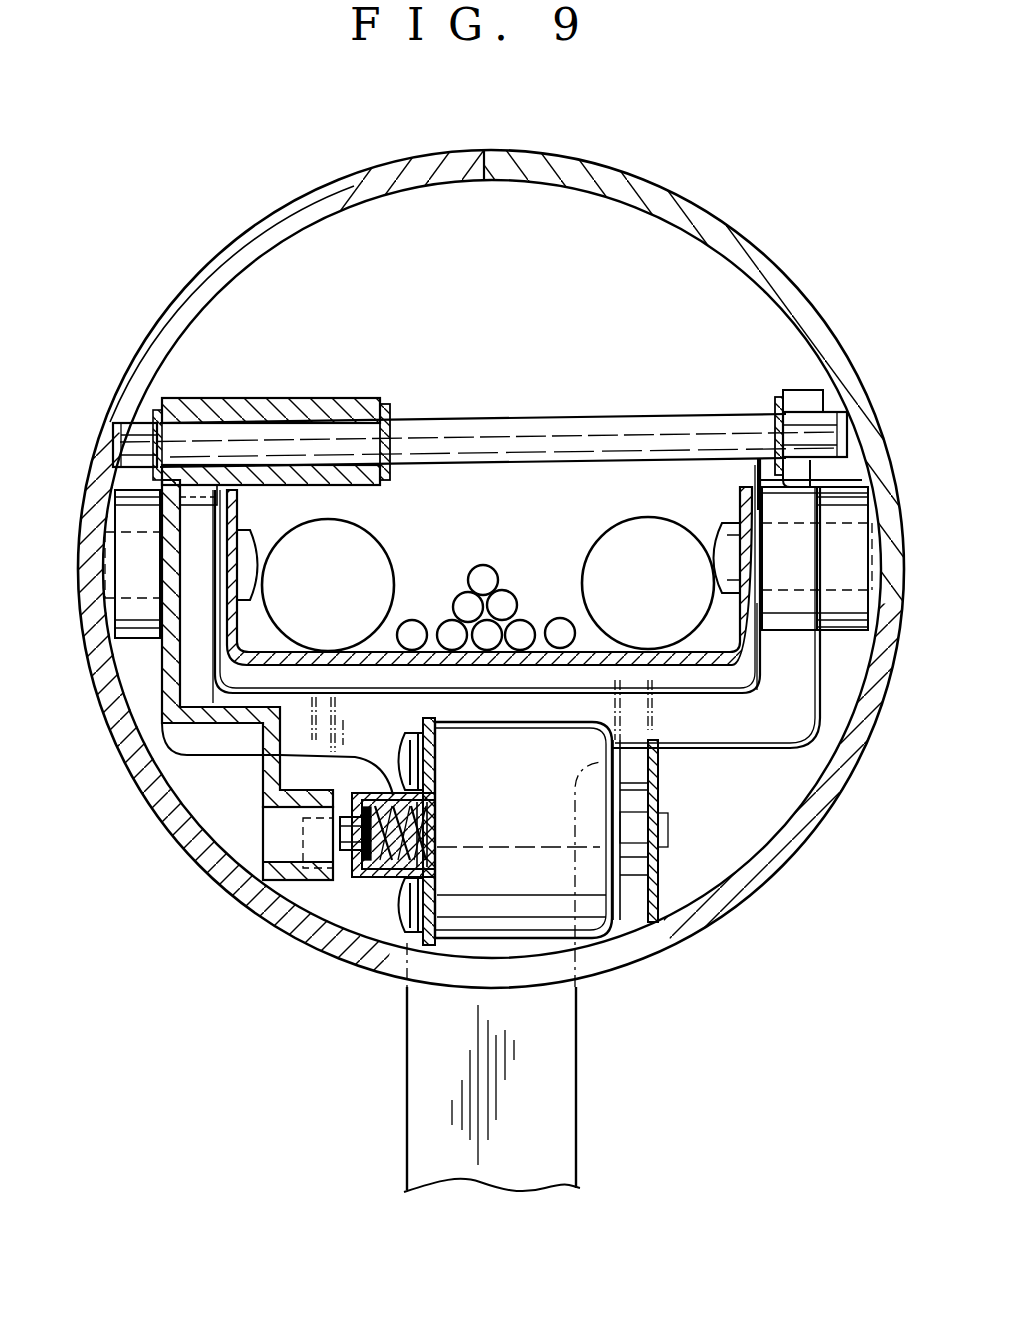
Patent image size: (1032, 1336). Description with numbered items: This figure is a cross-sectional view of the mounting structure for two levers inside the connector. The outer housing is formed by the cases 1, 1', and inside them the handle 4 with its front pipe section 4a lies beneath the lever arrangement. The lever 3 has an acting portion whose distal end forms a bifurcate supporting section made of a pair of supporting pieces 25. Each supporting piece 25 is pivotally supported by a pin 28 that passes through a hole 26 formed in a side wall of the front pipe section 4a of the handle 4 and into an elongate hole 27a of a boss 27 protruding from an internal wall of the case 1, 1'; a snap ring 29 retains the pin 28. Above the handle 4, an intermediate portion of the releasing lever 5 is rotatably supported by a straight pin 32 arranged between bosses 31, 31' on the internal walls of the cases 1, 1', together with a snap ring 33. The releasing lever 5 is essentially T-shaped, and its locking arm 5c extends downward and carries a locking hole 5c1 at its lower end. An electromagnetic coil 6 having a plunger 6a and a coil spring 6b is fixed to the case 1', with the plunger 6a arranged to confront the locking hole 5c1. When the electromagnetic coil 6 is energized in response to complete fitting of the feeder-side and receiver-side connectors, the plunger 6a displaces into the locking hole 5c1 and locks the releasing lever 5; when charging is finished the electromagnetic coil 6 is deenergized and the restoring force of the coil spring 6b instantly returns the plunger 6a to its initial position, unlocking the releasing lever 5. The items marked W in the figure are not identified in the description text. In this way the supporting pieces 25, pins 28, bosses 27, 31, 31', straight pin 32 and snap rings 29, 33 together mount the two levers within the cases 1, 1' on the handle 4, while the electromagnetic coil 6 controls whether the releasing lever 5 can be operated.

The case 1 is at (491, 569).
The case 1' is at (232, 296).
The lever 3 is at (563, 1115).
The handle 4 is at (257, 668).
The front pipe section 4a is at (667, 657).
The releasing lever 5 is at (270, 400).
The locking arm 5c is at (170, 690).
The locking hole 5c1 is at (273, 850).
The electromagnetic coil 6 is at (600, 930).
The plunger 6a is at (352, 853).
The coil spring 6b is at (393, 867).
The supporting piece 25 is at (237, 492).
The hole 26 is at (735, 525).
The boss 27 is at (140, 625).
The elongate hole 27a is at (812, 580).
The pin 28 is at (833, 610).
The snap ring 29 is at (757, 603).
The boss 31 is at (120, 397).
The boss 31' is at (843, 397).
The straight pin 32 is at (627, 432).
The snap ring 33 is at (390, 410).
The workpieces W is at (468, 607).